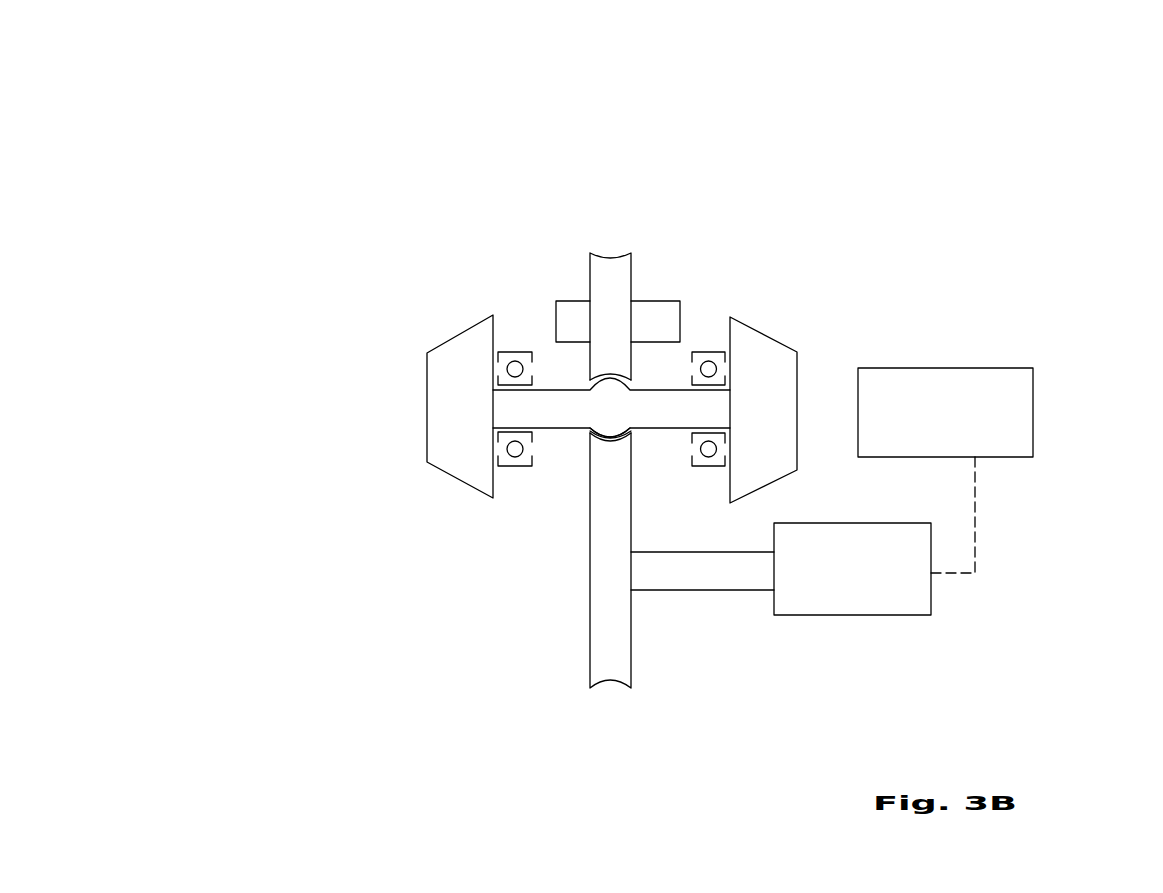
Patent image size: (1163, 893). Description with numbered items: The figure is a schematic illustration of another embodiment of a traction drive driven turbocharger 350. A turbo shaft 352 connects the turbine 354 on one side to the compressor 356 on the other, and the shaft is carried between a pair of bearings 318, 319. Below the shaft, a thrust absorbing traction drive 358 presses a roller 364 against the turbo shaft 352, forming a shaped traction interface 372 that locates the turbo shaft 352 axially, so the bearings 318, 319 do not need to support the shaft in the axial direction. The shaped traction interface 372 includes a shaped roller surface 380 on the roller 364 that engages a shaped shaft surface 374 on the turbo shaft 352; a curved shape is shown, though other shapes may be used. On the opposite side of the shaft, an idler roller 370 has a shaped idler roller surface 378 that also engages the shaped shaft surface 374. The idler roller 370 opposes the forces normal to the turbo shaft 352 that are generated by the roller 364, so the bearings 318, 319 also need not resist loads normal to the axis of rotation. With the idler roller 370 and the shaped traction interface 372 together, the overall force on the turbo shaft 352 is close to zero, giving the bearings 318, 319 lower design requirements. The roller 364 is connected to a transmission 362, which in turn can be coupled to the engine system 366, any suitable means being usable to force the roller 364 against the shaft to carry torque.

The traction drive driven turbocharger 350 is at (238, 163).
The turbo shaft 352 is at (542, 390).
The turbine 354 is at (427, 420).
The compressor 356 is at (780, 343).
The bearing 318 is at (515, 343).
The bearing 319 is at (712, 343).
The idler roller 370 is at (620, 258).
The shaped idler roller surface 378 is at (603, 378).
The shaped shaft surface 374 is at (613, 433).
The shaped traction interface 372 is at (575, 447).
The thrust absorbing traction drive 358 is at (551, 622).
The roller 364 is at (630, 657).
The shaped roller surface 380 is at (605, 447).
The transmission 362 is at (838, 615).
The engine system 366 is at (1003, 368).